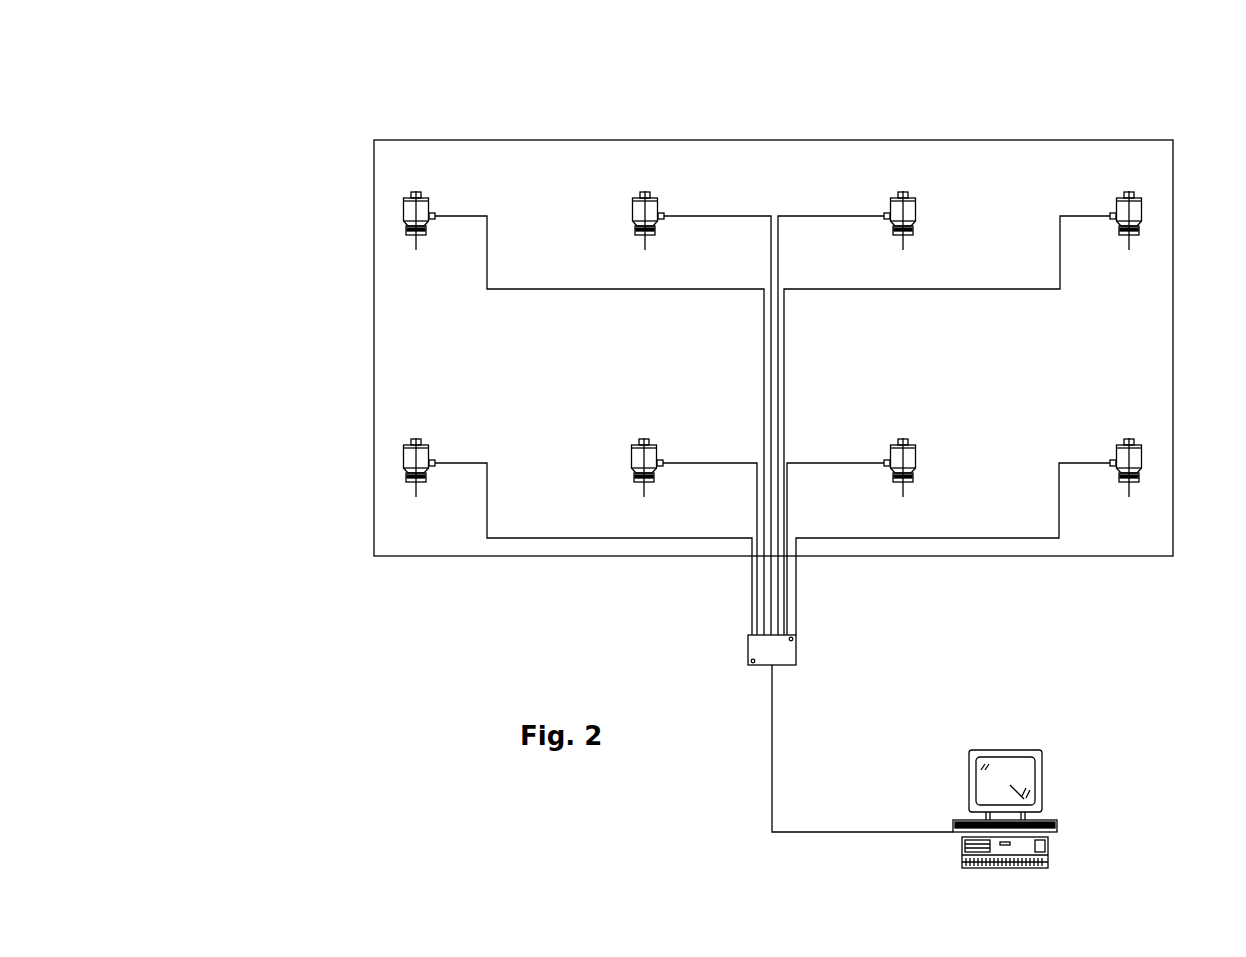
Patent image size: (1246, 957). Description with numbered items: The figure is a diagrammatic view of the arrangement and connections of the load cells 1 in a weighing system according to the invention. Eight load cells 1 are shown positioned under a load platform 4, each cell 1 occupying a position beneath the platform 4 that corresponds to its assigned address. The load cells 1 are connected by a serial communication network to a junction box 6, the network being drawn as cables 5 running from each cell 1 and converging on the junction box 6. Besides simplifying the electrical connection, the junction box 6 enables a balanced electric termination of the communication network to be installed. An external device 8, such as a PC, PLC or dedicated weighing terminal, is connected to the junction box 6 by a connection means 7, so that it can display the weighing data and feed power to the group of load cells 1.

The load cell 1 is at (405, 210).
The load platform 4 is at (425, 340).
The sensor cable 5 is at (699, 215).
The junction box 6 is at (752, 663).
The connection means 7 is at (812, 833).
The external device 8 is at (1044, 813).